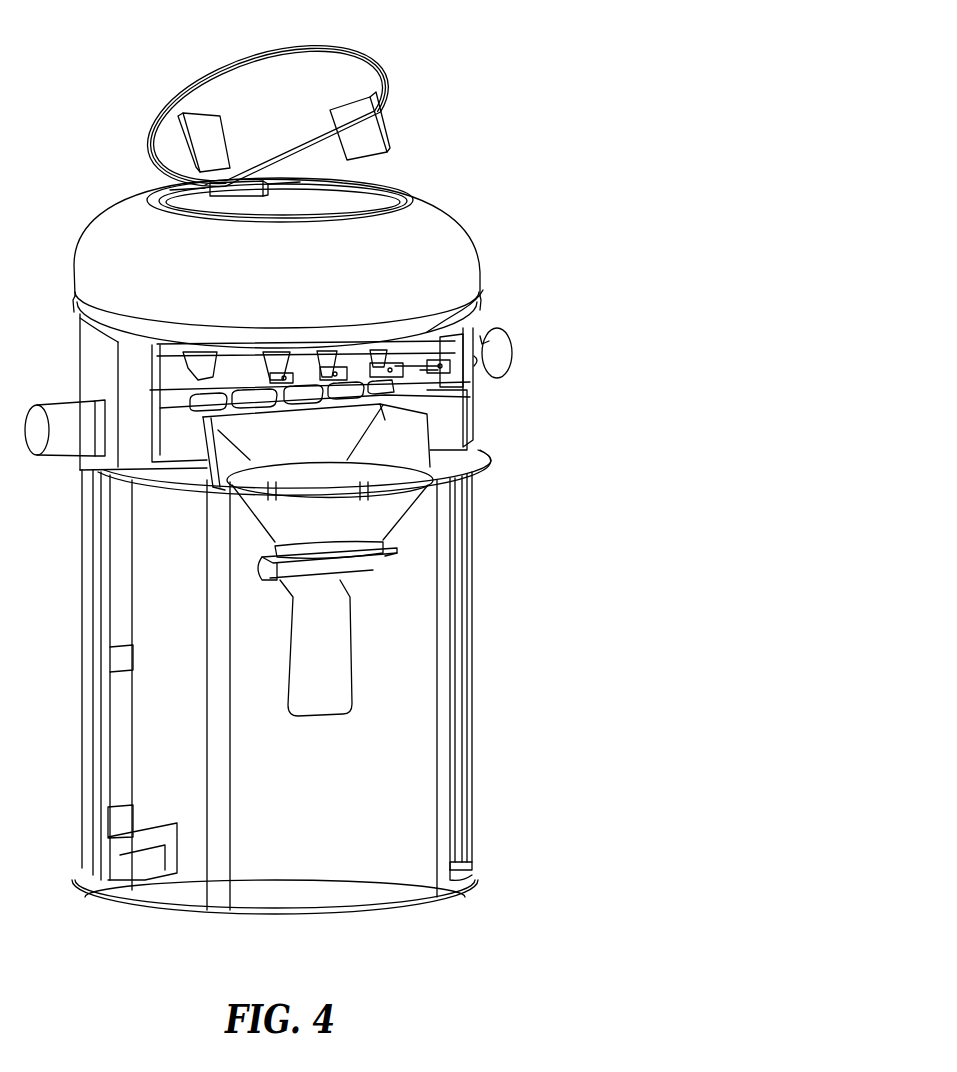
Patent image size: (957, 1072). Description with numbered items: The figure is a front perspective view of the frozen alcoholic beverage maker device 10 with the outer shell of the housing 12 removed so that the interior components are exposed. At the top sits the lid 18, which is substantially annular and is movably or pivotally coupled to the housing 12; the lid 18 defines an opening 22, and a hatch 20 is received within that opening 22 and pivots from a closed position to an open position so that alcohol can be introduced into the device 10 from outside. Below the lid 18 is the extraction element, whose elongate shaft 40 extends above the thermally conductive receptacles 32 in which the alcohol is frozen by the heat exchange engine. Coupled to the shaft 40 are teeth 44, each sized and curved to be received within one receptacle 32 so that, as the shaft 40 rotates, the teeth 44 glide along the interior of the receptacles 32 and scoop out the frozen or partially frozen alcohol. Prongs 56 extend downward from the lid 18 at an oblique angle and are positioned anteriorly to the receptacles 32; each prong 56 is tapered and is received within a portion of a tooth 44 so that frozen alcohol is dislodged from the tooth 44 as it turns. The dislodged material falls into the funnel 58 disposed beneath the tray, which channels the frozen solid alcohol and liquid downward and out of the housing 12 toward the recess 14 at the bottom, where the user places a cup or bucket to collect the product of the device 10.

The frozen alcoholic beverage maker device 10 is at (303, 476).
The housing 12 is at (478, 603).
The recess 14 is at (460, 878).
The lid 18 is at (425, 210).
The hatch 20 is at (223, 88).
The opening 22 is at (366, 208).
The thermally conductive receptacle 32 is at (440, 430).
The elongate shaft 40 is at (363, 393).
The teeth 44 is at (180, 352).
The prongs 56 is at (478, 291).
The funnel 58 is at (403, 480).